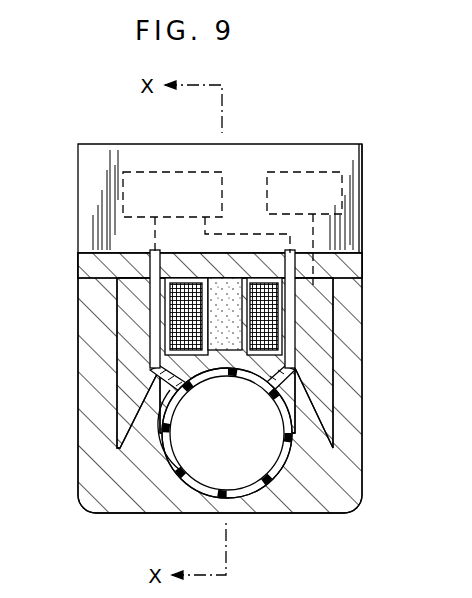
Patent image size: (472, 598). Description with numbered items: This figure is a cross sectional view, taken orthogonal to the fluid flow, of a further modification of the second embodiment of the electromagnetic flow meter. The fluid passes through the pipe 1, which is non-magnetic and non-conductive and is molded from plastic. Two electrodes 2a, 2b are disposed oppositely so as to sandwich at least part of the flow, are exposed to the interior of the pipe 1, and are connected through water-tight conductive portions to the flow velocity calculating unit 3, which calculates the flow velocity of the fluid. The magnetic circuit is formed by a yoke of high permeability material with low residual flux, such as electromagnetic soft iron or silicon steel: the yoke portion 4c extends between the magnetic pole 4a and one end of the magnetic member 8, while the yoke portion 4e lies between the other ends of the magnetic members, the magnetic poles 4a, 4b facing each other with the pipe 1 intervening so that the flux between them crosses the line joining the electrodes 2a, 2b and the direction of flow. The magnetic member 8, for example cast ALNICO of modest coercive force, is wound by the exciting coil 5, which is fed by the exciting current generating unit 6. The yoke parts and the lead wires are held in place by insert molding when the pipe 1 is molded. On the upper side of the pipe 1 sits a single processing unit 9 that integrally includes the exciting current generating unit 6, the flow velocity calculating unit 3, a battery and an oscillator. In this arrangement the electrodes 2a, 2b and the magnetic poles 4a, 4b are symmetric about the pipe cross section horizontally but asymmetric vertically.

The pipe 1 is at (277, 449).
The electrode 2a is at (178, 390).
The electrode 2b is at (293, 398).
The flow velocity calculating unit 3 is at (123, 182).
The magnetic pole 4a is at (222, 370).
The magnetic pole 4b is at (290, 430).
The yoke portion 4c is at (160, 392).
The yoke portion 4e is at (160, 262).
The exciting coil 5 is at (272, 312).
The exciting current generating unit 6 is at (342, 185).
The magnetic member 8 is at (224, 337).
The processing unit 9 is at (362, 224).